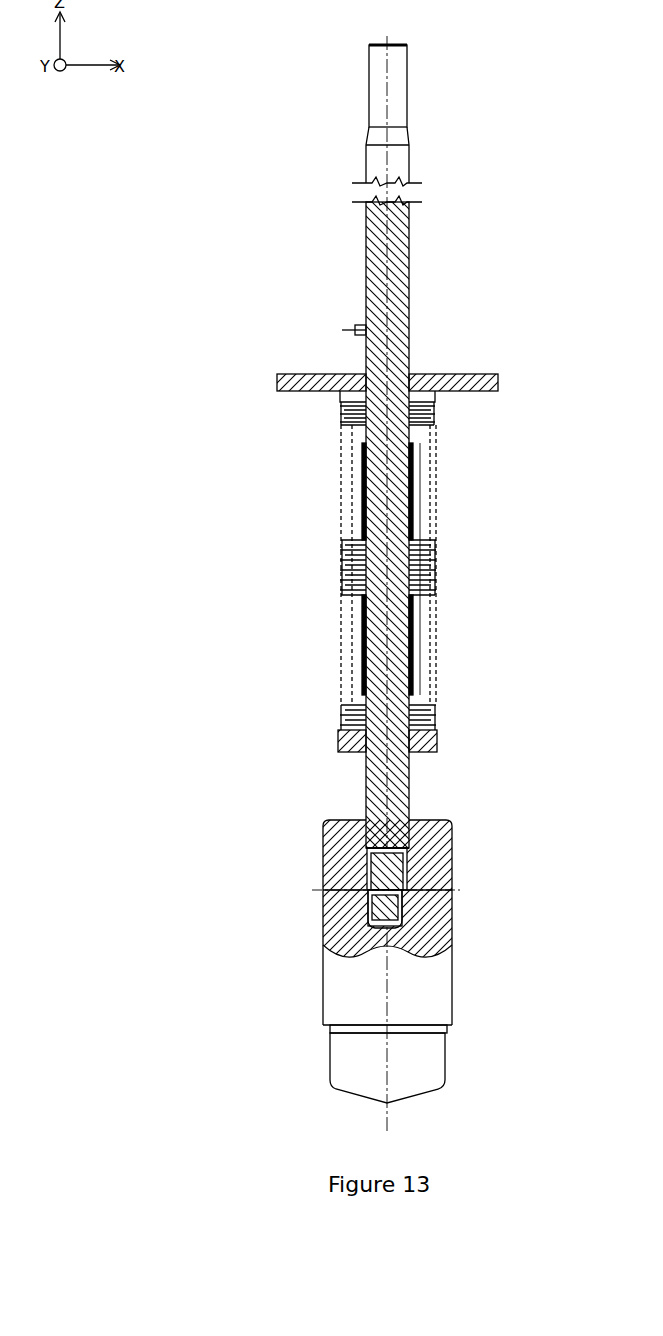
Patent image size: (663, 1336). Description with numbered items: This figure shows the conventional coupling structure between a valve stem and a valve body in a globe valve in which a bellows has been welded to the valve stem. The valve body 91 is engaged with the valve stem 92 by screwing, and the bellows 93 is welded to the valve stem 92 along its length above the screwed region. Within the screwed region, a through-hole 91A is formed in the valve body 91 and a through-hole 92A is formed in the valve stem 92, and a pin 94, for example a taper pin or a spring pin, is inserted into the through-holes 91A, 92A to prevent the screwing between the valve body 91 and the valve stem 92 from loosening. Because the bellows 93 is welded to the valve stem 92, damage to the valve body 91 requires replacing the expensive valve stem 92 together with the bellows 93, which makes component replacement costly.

The valve body 91 is at (440, 998).
The through-hole 91A is at (324, 887).
The valve stem 92 is at (409, 766).
The through-hole 92A is at (364, 882).
The bellows 93 is at (436, 543).
The pin 94 is at (442, 885).